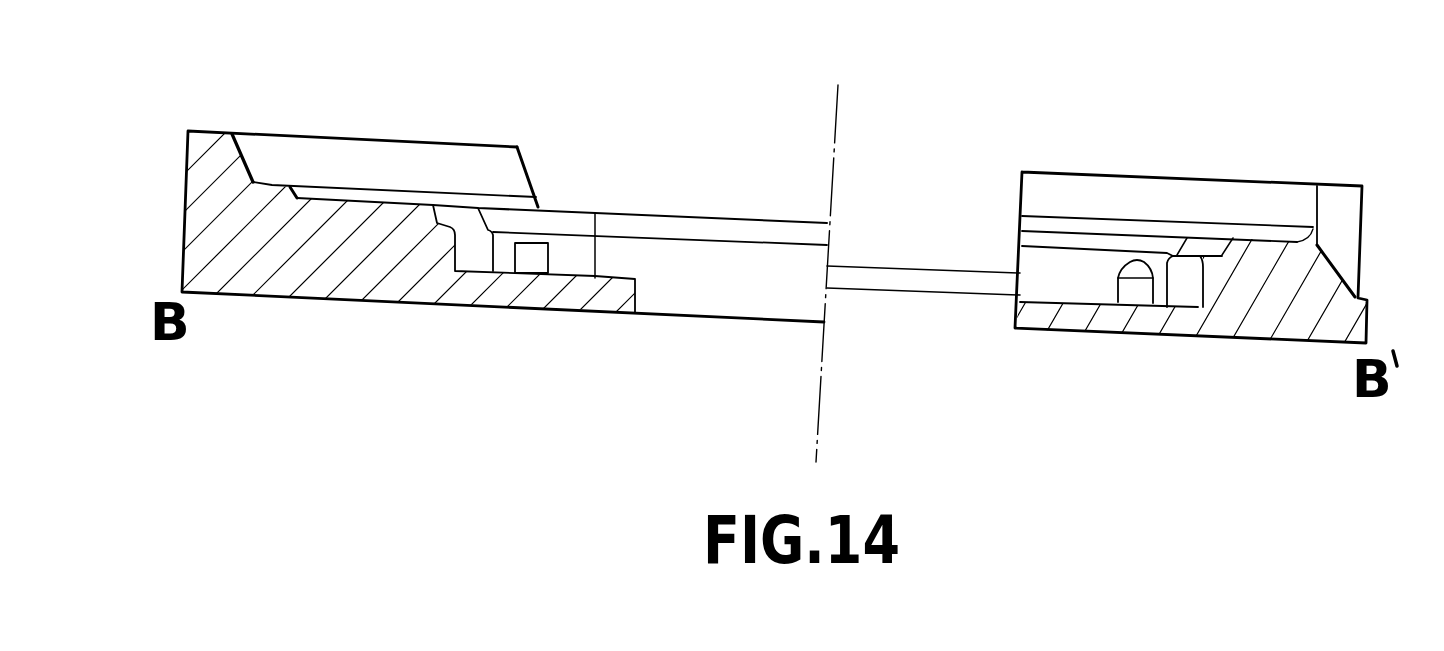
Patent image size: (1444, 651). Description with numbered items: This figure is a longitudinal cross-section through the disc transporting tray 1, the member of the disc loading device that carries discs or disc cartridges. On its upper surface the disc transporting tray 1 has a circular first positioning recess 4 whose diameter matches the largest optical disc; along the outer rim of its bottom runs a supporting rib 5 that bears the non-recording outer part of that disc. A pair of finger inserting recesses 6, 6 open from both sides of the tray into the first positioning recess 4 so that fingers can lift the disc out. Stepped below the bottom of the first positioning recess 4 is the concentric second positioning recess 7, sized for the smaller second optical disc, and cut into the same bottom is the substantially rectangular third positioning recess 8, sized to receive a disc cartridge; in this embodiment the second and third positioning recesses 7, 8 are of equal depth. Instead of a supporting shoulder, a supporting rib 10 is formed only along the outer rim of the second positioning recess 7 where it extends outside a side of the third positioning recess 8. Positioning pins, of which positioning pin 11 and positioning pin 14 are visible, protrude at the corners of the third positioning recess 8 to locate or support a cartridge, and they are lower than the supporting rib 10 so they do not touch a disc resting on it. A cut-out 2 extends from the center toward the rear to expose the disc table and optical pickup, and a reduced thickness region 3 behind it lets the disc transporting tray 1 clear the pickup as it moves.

The disc transporting tray 1 is at (1296, 157).
The cut-out 2 is at (637, 296).
The reduced thickness region 3 is at (910, 289).
The first positioning recess 4 is at (240, 160).
The supporting rib 5 is at (272, 184).
The finger inserting recess 6 is at (526, 173).
The second positioning recess 7 is at (466, 207).
The third positioning recess 8 is at (554, 209).
The supporting rib 10 is at (452, 225).
The positioning pin 11 is at (1123, 287).
The positioning pin 14 is at (542, 254).